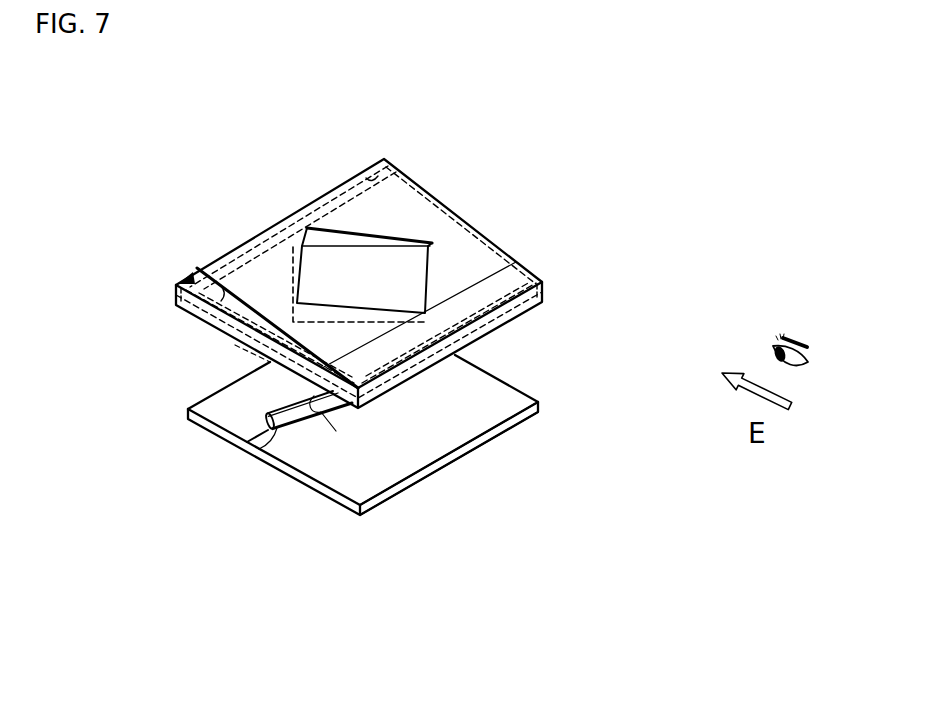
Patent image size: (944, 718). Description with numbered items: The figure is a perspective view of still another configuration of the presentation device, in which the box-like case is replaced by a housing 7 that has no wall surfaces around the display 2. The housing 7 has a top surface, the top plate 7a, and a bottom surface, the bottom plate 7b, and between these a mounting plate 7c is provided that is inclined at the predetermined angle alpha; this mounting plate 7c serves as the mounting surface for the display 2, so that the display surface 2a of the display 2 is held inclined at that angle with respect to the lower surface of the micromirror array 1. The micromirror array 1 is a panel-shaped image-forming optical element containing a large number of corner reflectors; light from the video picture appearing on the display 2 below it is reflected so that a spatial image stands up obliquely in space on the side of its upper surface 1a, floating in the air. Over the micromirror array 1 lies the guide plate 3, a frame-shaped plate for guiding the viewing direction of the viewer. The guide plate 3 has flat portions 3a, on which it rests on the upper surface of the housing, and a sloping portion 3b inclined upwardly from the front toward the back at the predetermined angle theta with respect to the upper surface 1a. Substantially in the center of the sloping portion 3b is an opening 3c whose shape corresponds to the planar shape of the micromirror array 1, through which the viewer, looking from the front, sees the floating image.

The micromirror array 1 is at (397, 258).
The upper surface 1a is at (405, 240).
The display 2 is at (265, 425).
The display surface 2a is at (308, 399).
The guide plate 3 is at (494, 248).
The flat portions 3a is at (500, 287).
The sloping portion 3b is at (386, 162).
The opening 3c is at (307, 270).
The housing 7 is at (499, 345).
The top plate 7a is at (232, 344).
The bottom plate 7b is at (445, 456).
The mounting plate 7c is at (321, 393).